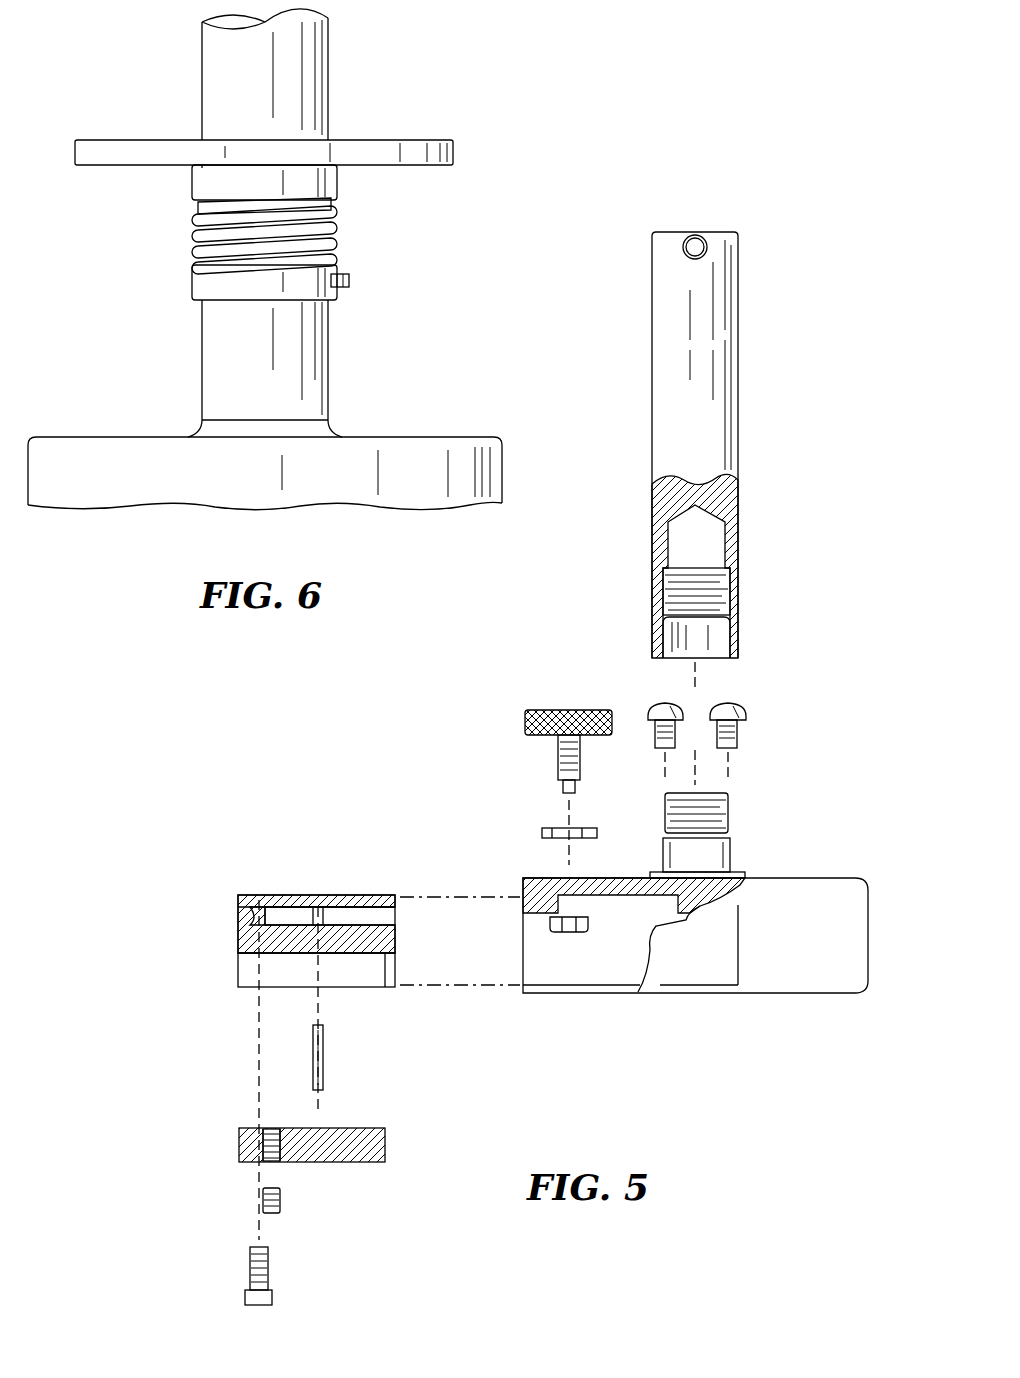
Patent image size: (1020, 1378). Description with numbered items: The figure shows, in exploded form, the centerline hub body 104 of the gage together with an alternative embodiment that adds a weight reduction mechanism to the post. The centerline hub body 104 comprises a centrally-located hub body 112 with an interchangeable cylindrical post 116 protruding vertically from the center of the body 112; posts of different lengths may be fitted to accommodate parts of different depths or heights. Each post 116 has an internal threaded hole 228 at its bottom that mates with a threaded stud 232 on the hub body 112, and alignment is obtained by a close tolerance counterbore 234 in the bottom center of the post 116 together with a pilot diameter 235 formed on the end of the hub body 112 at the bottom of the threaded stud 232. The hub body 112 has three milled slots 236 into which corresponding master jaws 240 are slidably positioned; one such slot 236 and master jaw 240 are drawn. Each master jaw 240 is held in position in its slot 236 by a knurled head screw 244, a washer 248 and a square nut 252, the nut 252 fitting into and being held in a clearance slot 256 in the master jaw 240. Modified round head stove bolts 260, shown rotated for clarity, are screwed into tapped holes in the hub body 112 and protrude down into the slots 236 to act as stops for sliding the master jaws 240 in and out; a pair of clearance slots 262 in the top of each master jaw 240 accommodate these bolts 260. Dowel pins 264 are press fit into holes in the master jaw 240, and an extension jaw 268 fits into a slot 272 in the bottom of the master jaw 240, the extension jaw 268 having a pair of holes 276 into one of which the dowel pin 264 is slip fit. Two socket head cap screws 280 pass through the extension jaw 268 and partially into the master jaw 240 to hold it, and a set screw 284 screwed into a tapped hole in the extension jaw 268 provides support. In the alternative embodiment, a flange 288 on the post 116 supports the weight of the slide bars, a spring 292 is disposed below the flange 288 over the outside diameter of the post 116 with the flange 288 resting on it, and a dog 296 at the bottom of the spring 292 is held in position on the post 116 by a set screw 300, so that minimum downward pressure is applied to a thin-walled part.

In FIG. 5, the centerline hub body 104 is at (627, 218).
In FIG. 6, the interchangeable cylindrical post 116 is at (320, 63).
In FIG. 5, the interchangeable cylindrical post 116 is at (735, 317).
In FIG. 6, the hub body 112 is at (432, 437).
In FIG. 5, the hub body 112 is at (848, 880).
In FIG. 6, the flange 288 is at (386, 148).
In FIG. 6, the spring 292 is at (336, 242).
In FIG. 6, the dog 296 is at (192, 286).
In FIG. 6, the set screw 300 is at (349, 285).
In FIG. 5, the internal threaded hole 228 is at (720, 591).
In FIG. 5, the counterbore 234 is at (718, 641).
In FIG. 5, the modified round head stove bolts 260 is at (658, 706).
In FIG. 5, the knurled head screw 244 is at (553, 710).
In FIG. 5, the washer 248 is at (545, 829).
In FIG. 5, the threaded stud 232 is at (722, 808).
In FIG. 5, the pilot diameter 235 is at (718, 858).
In FIG. 5, the slot 236 is at (540, 973).
In FIG. 5, the square nut 252 is at (576, 932).
In FIG. 5, the master jaw 240 is at (238, 912).
In FIG. 5, the clearance slots 262 is at (300, 904).
In FIG. 5, the clearance slot 256 is at (385, 917).
In FIG. 5, the slot 272 is at (245, 964).
In FIG. 5, the dowel pin 264 is at (323, 1055).
In FIG. 5, the extension jaw 268 is at (382, 1148).
In FIG. 5, the holes 276 is at (318, 1165).
In FIG. 5, the set screw 284 is at (282, 1200).
In FIG. 5, the socket head cap screws 280 is at (268, 1270).